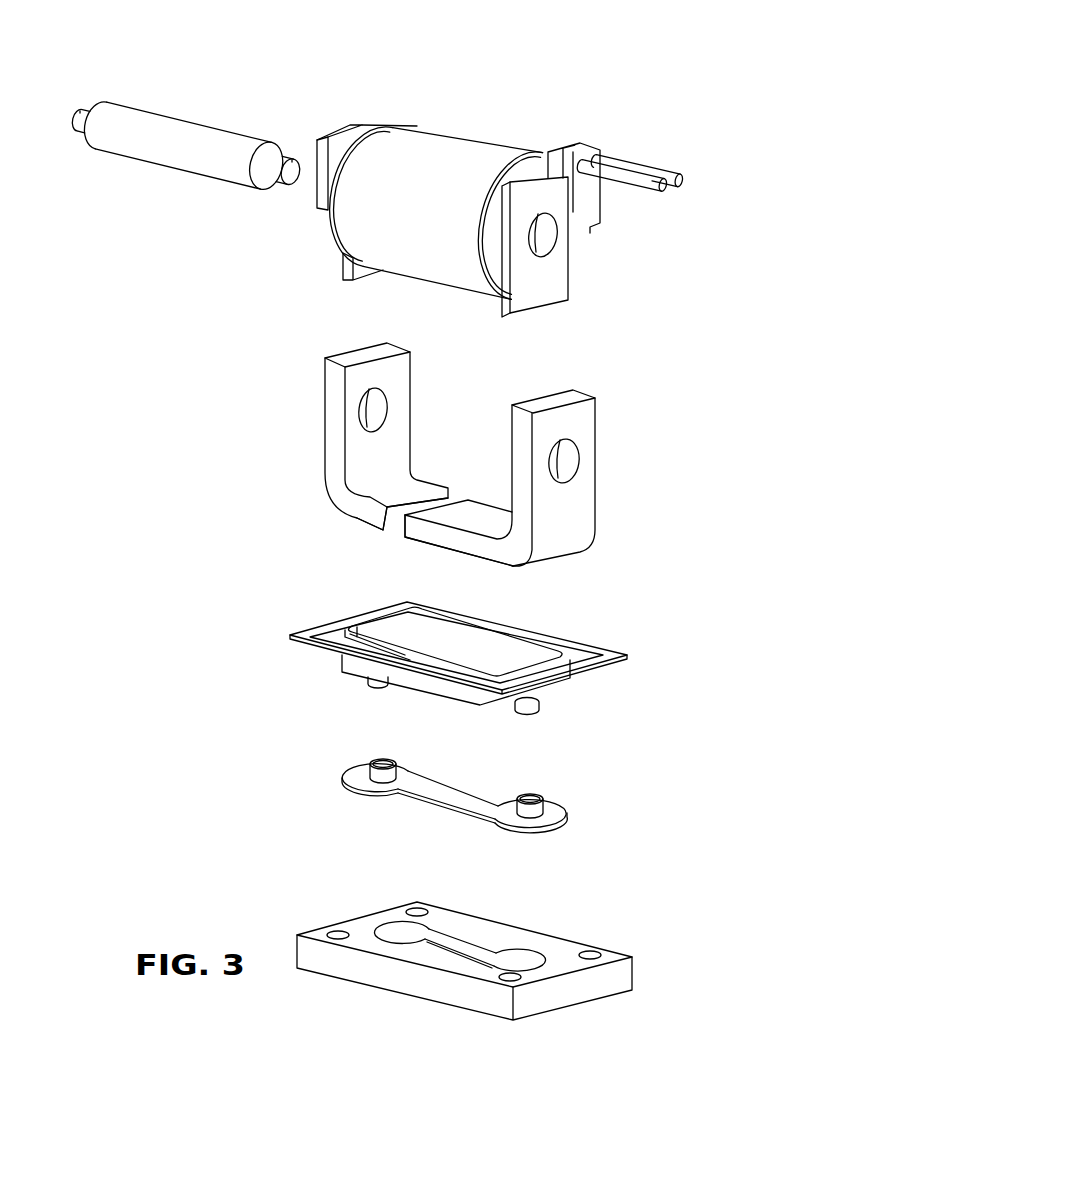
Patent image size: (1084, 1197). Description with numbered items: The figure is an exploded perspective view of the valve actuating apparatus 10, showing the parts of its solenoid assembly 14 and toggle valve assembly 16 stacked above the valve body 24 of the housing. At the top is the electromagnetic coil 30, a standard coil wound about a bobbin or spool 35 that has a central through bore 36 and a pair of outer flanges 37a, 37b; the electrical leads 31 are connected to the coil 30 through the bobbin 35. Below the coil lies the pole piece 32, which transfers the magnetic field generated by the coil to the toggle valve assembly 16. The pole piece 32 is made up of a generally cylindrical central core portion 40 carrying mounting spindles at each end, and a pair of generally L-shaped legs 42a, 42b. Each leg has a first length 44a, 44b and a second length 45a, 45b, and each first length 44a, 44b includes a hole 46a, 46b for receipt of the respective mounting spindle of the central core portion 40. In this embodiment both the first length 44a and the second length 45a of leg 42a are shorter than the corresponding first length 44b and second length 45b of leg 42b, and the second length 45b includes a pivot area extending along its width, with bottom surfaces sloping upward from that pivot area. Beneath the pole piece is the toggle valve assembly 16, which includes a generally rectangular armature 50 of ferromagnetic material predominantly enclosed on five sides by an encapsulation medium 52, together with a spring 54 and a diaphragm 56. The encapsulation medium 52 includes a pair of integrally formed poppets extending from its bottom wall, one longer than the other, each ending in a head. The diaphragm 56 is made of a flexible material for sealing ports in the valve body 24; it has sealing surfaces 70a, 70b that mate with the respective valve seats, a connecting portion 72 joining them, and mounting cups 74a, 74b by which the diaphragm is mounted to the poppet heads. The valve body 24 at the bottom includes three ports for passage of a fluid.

The valve actuating apparatus 10 is at (684, 88).
The solenoid assembly 14 is at (668, 359).
The toggle valve assembly 16 is at (616, 708).
The valve body 24 is at (617, 975).
The electromagnetic coil 30 is at (452, 148).
The electrical leads 31 is at (607, 167).
The pole piece 32 is at (165, 178).
The bobbin 35 is at (585, 233).
The central through bore 36 is at (548, 235).
The outer flange 37a is at (540, 300).
The outer flange 37b is at (327, 202).
The central core portion 40 is at (197, 150).
The leg 42a is at (328, 487).
The leg 42b is at (588, 523).
The first length 44a is at (335, 370).
The first length 44b is at (590, 415).
The second length 45a is at (355, 510).
The second length 45b is at (452, 542).
The hole 46a is at (375, 407).
The hole 46b is at (570, 462).
The armature 50 is at (520, 652).
The encapsulation medium 52 is at (365, 667).
The spring 54 is at (618, 652).
The diaphragm 56 is at (480, 795).
The sealing surface 70a is at (355, 793).
The sealing surface 70b is at (550, 832).
The connecting portion 72 is at (445, 792).
The mounting cup 74a is at (373, 763).
The mounting cup 74b is at (540, 797).